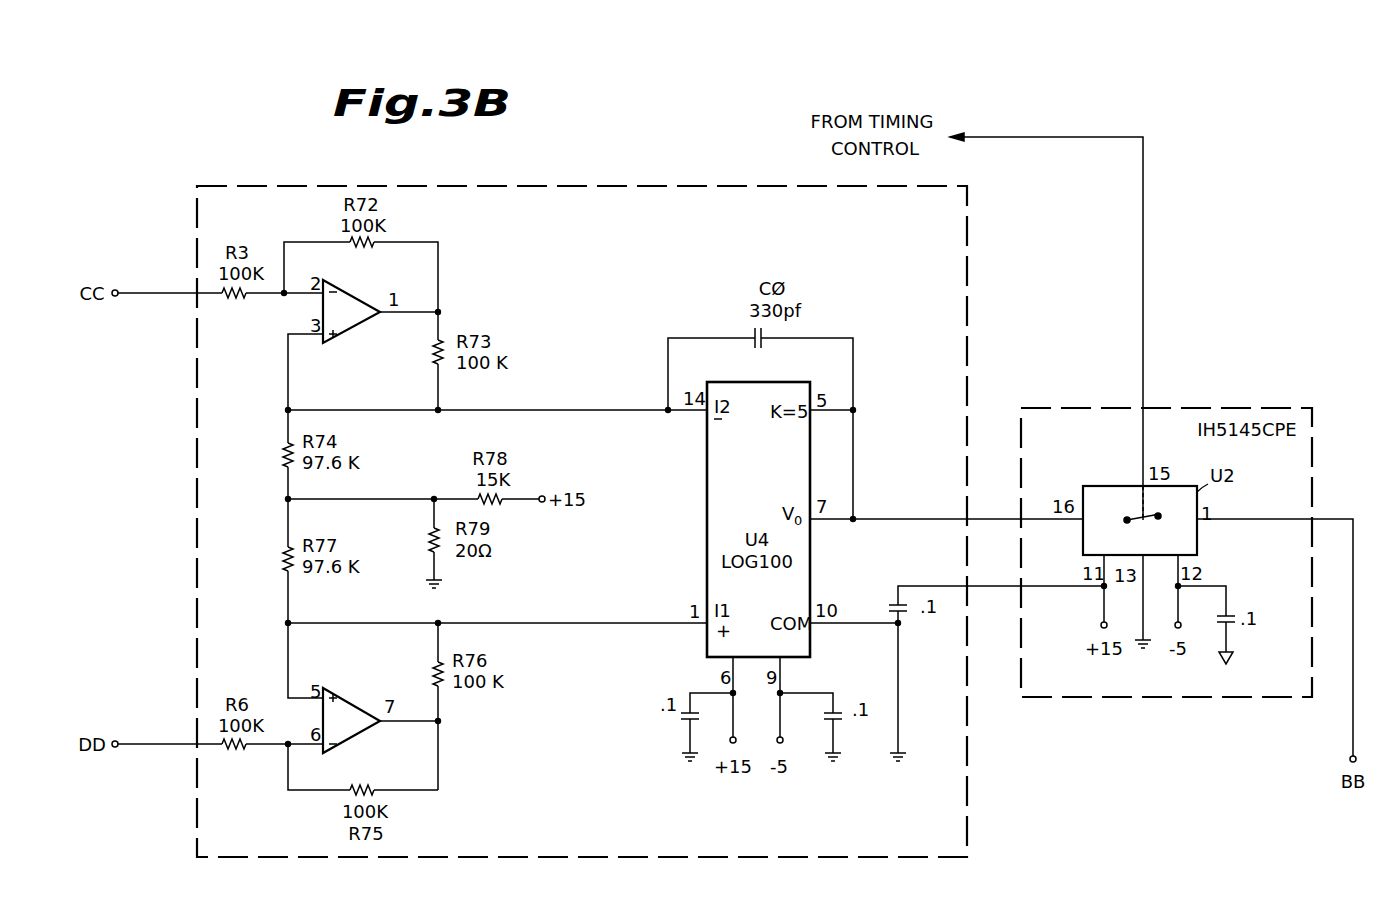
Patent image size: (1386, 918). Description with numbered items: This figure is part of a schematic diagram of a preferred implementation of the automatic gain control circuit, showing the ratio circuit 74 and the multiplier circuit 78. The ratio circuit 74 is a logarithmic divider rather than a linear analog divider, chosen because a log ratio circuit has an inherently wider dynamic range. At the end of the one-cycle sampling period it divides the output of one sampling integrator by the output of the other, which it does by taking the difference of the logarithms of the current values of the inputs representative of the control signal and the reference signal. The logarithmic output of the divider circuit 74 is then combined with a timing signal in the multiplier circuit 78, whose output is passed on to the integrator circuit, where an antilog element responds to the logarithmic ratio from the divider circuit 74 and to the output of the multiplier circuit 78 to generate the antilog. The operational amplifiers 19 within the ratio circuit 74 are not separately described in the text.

The ratio circuit 74 is at (502, 186).
The multiplier circuit 78 is at (1208, 408).
The operational amplifier 19 is at (358, 336).